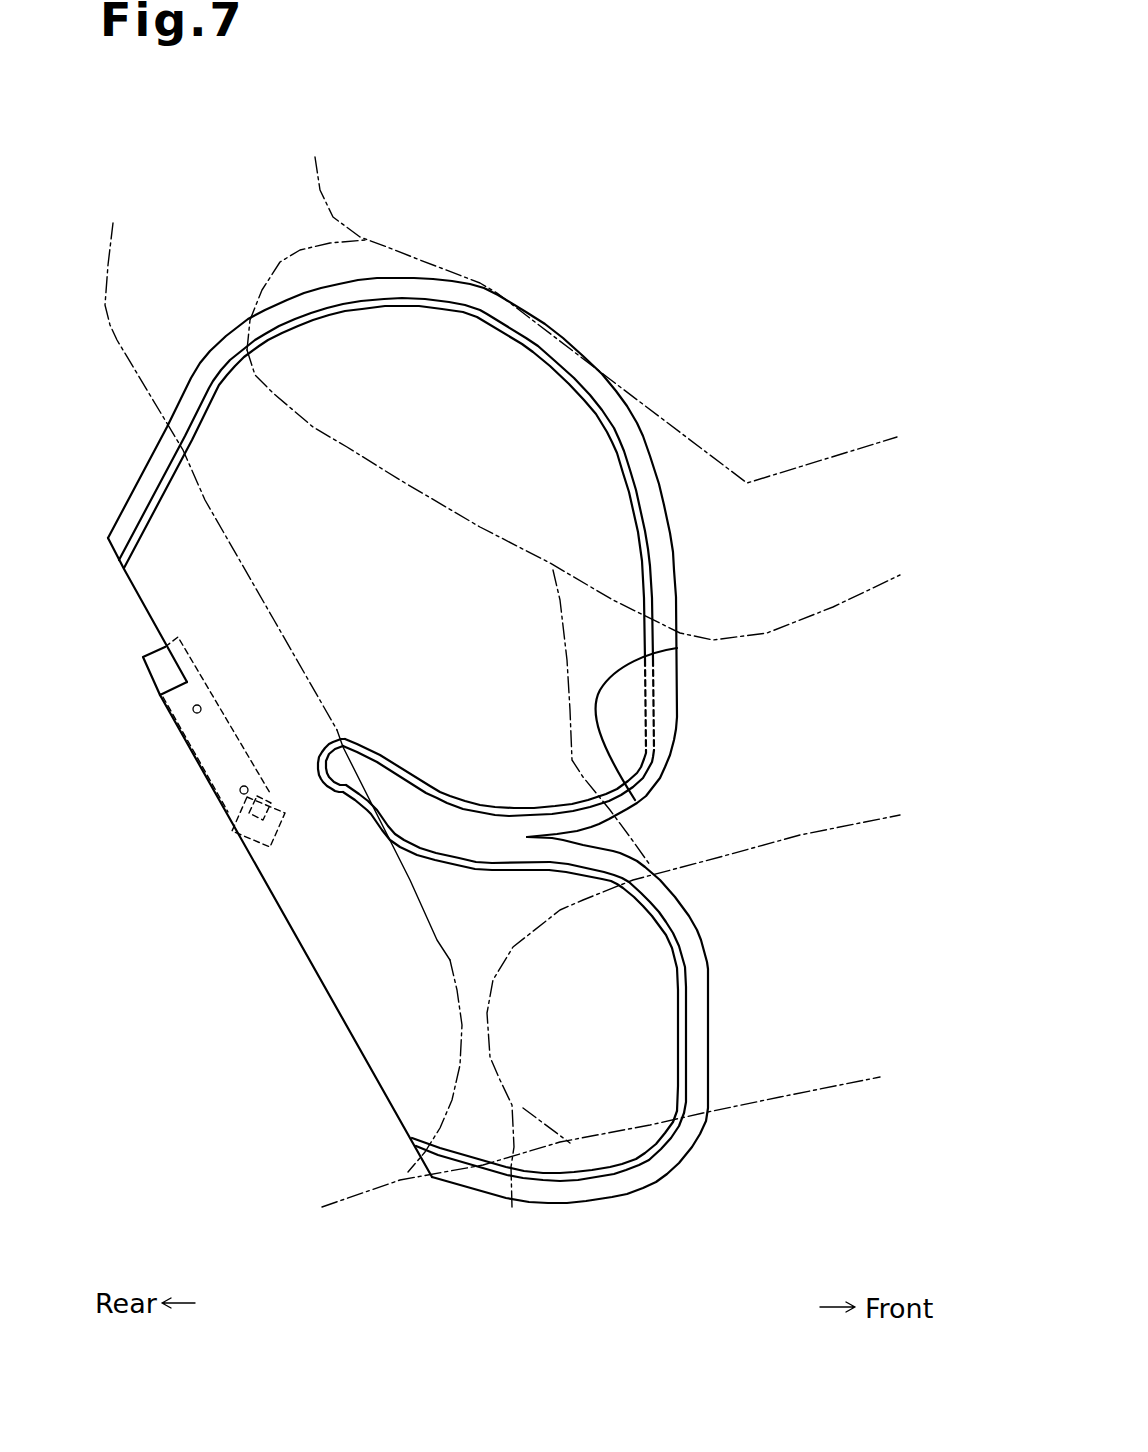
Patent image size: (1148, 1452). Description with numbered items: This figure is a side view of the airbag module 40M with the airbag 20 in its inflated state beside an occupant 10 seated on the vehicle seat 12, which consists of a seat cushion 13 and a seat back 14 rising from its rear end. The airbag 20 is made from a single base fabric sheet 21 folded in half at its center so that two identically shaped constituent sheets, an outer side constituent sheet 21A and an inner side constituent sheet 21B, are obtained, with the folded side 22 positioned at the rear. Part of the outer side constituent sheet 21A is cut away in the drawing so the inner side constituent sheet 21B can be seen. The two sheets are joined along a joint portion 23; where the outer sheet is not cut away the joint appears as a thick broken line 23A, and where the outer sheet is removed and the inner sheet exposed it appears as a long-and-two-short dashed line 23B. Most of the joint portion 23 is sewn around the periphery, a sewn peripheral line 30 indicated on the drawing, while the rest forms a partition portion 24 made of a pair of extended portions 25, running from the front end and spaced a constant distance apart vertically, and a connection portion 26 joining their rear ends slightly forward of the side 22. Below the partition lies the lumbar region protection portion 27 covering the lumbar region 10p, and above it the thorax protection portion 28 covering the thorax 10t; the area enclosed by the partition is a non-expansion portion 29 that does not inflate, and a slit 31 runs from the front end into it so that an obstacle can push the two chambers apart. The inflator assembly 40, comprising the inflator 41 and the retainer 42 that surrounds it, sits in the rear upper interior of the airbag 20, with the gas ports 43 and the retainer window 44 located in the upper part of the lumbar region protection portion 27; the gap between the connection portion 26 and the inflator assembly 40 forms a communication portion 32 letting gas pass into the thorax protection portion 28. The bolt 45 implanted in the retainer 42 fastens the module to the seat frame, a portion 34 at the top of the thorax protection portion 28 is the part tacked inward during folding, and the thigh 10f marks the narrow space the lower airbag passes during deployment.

The occupant 10 is at (322, 190).
The thorax 10t is at (567, 667).
The lumbar region 10p is at (453, 1127).
The thigh 10f is at (693, 1031).
The vehicle seat 12 is at (205, 500).
The seat back 14 is at (277, 591).
The seat cushion 13 is at (778, 1097).
The airbag 20 is at (677, 552).
The base fabric sheet 21 is at (763, 640).
The outer side constituent sheet 21A is at (677, 650).
The inner side constituent sheet 21B is at (677, 710).
The side 22 is at (302, 950).
The joint portion 23 is at (632, 931).
The joint portion part where outer side constituent sheet is not cut away 23A is at (686, 956).
The joint portion section where inner side constituent sheet is exposed 23B is at (647, 753).
The partition portion 24 is at (470, 870).
The extended portion 25 is at (417, 778).
The connection portion 26 is at (322, 745).
The lumbar region protection portion 27 is at (557, 1015).
The thorax protection portion 28 is at (422, 625).
The non-expansion portion 29 is at (432, 830).
The seam 30 is at (652, 497).
The slit 31 is at (568, 830).
The communication portion 32 is at (302, 782).
The portion above the folding line 34 is at (313, 332).
The inflator assembly 40 is at (198, 752).
The airbag module 40M is at (281, 1017).
The inflator 41 is at (282, 730).
The retainer 42 is at (195, 754).
The gas port 43 is at (270, 800).
The window 44 is at (268, 838).
The bolt 45 is at (193, 709).